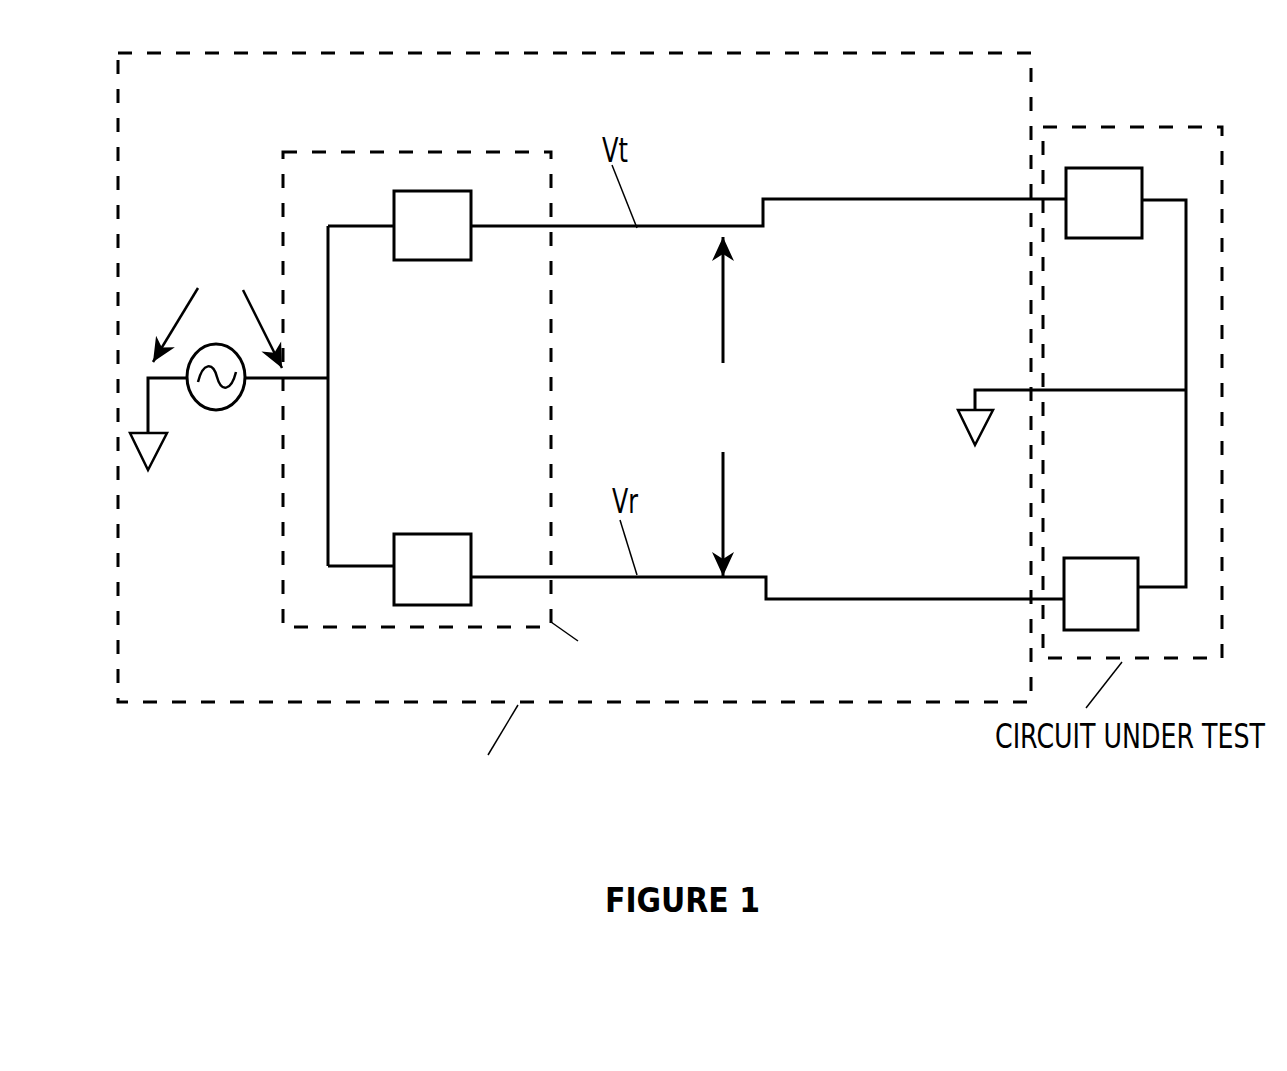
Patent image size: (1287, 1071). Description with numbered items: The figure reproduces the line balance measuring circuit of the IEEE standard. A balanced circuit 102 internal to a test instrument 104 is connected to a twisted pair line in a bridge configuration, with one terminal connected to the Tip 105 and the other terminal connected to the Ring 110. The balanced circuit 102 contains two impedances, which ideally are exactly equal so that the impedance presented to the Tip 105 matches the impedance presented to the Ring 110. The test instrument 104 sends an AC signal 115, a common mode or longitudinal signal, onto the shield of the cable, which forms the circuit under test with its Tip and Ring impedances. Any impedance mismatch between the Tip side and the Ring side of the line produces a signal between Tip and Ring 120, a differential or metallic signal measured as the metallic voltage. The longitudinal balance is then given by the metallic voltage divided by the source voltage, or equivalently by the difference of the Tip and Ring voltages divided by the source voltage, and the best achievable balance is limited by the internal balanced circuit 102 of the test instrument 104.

The balanced circuit 102 is at (357, 623).
The test instrument 104 is at (155, 703).
The Tip 105 is at (1046, 197).
The Ring 110 is at (1045, 590).
The AC signal 115 is at (227, 408).
The signal between Tip and Ring 120 is at (757, 408).